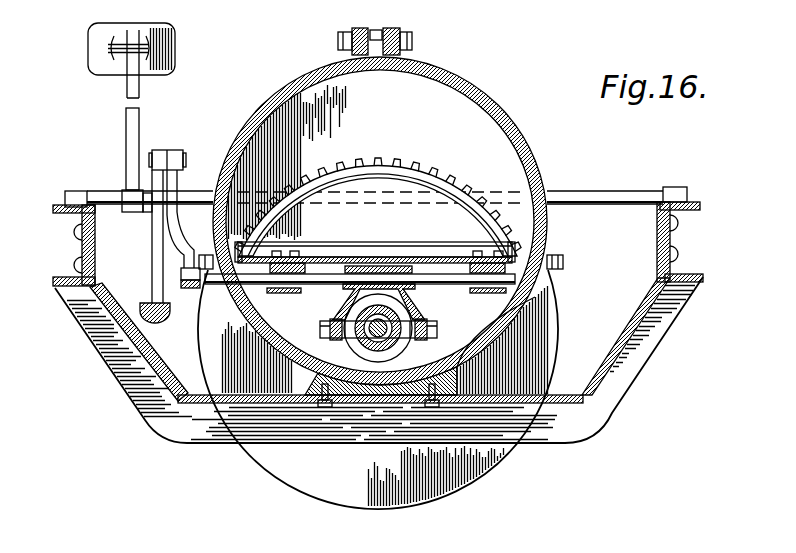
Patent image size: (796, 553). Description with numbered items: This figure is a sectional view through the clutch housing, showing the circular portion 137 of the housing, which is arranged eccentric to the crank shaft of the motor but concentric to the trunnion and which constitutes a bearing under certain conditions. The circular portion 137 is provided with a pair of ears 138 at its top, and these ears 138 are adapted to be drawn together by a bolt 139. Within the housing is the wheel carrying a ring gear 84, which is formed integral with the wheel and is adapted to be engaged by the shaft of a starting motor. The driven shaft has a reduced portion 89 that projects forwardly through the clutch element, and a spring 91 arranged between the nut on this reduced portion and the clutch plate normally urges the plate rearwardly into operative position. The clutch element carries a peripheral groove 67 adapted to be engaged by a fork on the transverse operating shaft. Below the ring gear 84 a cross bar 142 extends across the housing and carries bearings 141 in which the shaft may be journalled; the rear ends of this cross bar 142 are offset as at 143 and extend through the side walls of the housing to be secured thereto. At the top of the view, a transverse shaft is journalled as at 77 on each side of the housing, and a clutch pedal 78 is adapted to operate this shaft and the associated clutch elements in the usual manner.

The circular portion 137 is at (509, 112).
The ears 138 is at (402, 29).
The bolt 139 is at (338, 40).
The clutch pedal 78 is at (176, 58).
The journal 77 is at (80, 192).
The ring gear 84 is at (440, 180).
The cross bar 142 is at (366, 257).
The offset 143 is at (458, 250).
The bearings 141 is at (294, 290).
The spring 91 is at (422, 307).
The reduced portion 89 is at (360, 352).
The peripheral groove 67 is at (401, 345).